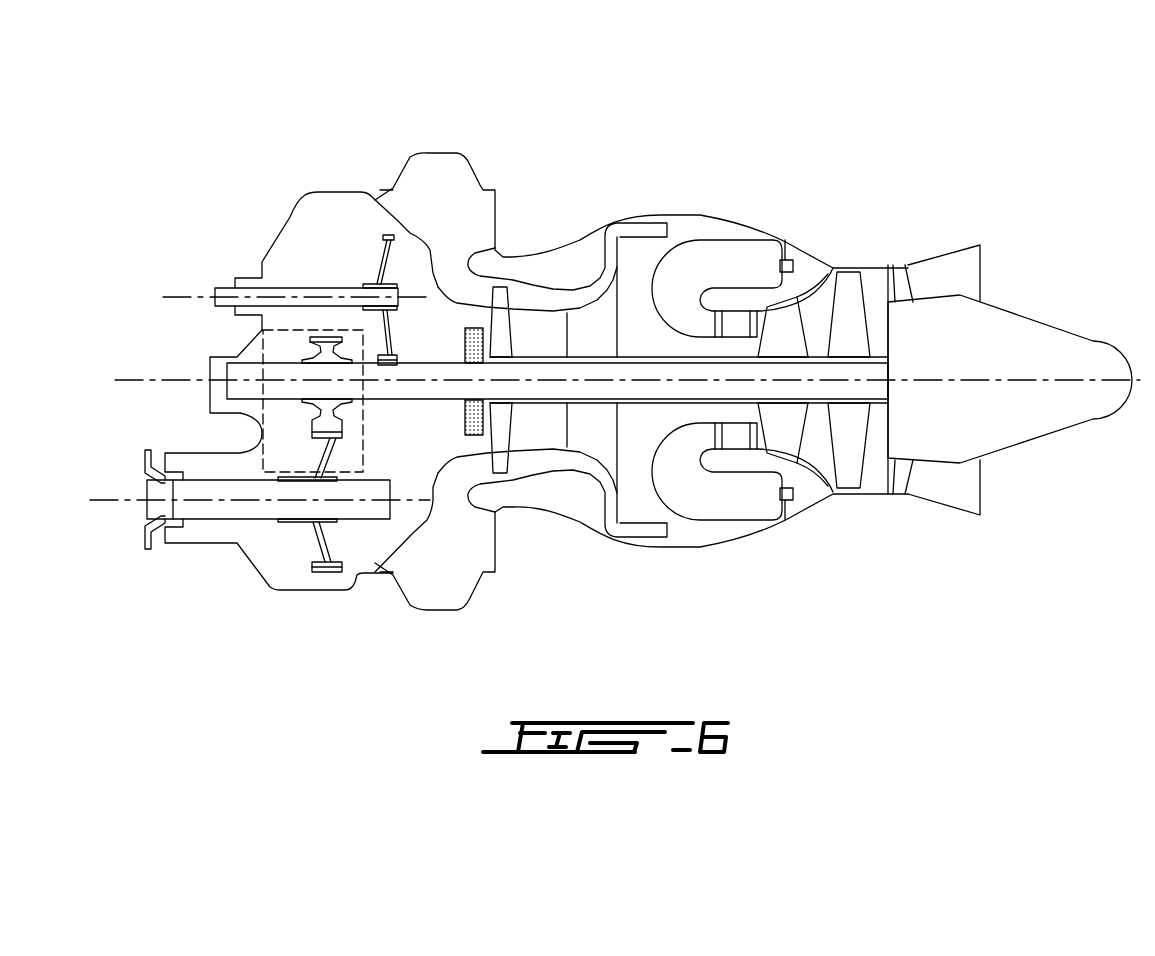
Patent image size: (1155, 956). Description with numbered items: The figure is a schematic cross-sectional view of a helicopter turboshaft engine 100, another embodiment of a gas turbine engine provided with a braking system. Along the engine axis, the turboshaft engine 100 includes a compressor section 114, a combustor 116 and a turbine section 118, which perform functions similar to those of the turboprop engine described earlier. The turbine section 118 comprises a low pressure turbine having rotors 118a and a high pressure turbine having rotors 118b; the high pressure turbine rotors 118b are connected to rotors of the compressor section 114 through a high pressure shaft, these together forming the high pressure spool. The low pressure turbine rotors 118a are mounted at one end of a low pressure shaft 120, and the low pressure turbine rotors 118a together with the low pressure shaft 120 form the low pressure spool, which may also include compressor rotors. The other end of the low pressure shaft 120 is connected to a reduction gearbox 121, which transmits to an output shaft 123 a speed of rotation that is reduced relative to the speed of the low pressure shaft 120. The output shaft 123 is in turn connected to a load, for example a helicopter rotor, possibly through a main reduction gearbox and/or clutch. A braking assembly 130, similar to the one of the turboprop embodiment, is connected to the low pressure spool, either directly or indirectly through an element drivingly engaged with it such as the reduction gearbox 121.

The helicopter turboshaft engine 100 is at (955, 162).
The compressor section 114 is at (590, 327).
The combustor 116 is at (717, 263).
The turbine section 118 is at (835, 417).
The low pressure turbine rotor 118a is at (847, 283).
The high pressure turbine rotor 118b is at (777, 430).
The low pressure shaft 120 is at (450, 363).
The reduction gearbox 121 is at (313, 337).
The output shaft 123 is at (263, 507).
The braking assembly 130 is at (472, 436).